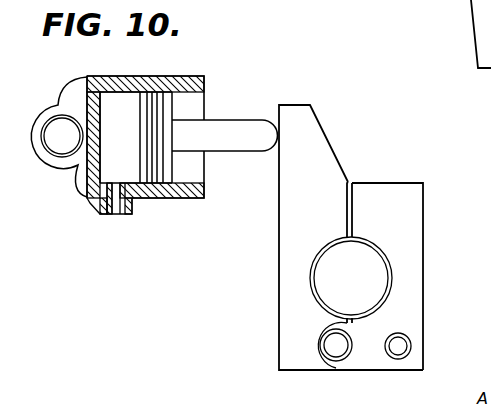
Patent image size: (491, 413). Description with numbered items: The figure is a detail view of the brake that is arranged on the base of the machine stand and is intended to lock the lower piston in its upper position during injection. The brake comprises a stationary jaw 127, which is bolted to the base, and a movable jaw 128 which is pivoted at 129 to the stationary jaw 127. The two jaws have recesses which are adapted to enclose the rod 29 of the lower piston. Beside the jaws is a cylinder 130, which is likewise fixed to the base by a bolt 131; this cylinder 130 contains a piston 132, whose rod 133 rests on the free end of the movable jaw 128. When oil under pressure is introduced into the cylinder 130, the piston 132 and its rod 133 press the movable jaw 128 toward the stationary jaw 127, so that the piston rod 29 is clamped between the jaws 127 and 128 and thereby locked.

The cylinder 130 is at (133, 85).
The bolt 131 is at (55, 148).
The piston 132 is at (157, 178).
The rod 133 is at (236, 128).
The stationary jaw 127 is at (413, 232).
The movable jaw 128 is at (283, 271).
The rod 29 is at (375, 297).
The pivot 129 is at (335, 355).